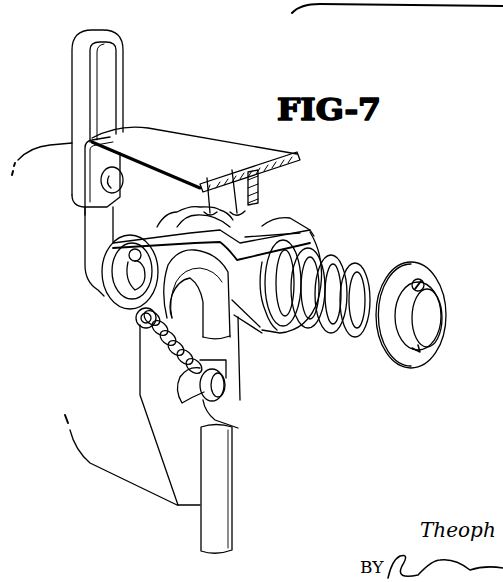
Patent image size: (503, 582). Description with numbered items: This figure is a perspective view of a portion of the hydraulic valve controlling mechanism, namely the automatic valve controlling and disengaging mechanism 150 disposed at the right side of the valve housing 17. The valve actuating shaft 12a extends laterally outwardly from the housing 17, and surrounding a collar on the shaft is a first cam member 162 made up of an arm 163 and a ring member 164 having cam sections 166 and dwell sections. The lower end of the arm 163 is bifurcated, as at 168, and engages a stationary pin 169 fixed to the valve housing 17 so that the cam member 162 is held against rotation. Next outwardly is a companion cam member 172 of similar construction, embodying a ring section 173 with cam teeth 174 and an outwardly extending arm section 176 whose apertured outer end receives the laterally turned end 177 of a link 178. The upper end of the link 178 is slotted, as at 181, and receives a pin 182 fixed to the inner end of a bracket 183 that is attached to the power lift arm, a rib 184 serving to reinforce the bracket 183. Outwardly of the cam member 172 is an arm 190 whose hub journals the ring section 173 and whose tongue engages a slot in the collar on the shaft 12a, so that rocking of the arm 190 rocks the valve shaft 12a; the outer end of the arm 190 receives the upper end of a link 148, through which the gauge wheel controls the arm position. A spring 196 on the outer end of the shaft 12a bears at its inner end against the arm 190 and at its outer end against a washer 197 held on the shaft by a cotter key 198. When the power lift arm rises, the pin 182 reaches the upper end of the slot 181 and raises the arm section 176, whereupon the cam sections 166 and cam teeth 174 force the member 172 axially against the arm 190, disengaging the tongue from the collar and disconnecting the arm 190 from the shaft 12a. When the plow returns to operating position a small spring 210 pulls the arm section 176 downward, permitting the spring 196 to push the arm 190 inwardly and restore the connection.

The valve actuating shaft 12a is at (433, 310).
The valve housing 17 is at (140, 473).
The link 148 is at (222, 500).
The automatic valve controlling and disengaging mechanism 150 is at (258, 343).
The first cam member 162 is at (172, 398).
The arm 163 is at (233, 373).
The ring member 164 is at (205, 184).
The cam sections 166 is at (240, 180).
The bifurcated end 168 is at (238, 428).
The stationary pin 169 is at (218, 389).
The companion cam member 172 is at (188, 200).
The ring section 173 is at (268, 228).
The cam teeth 174 is at (258, 212).
The arm section 176 is at (160, 242).
The laterally turned end 177 is at (150, 272).
The link 178 is at (97, 226).
The slot 181 is at (108, 85).
The pin 182 is at (110, 190).
The bracket 183 is at (172, 127).
The rib 184 is at (259, 182).
The arm 190 is at (240, 286).
The spring 196 is at (359, 262).
The washer 197 is at (433, 275).
The cotter key 198 is at (421, 281).
The small spring 210 is at (147, 343).